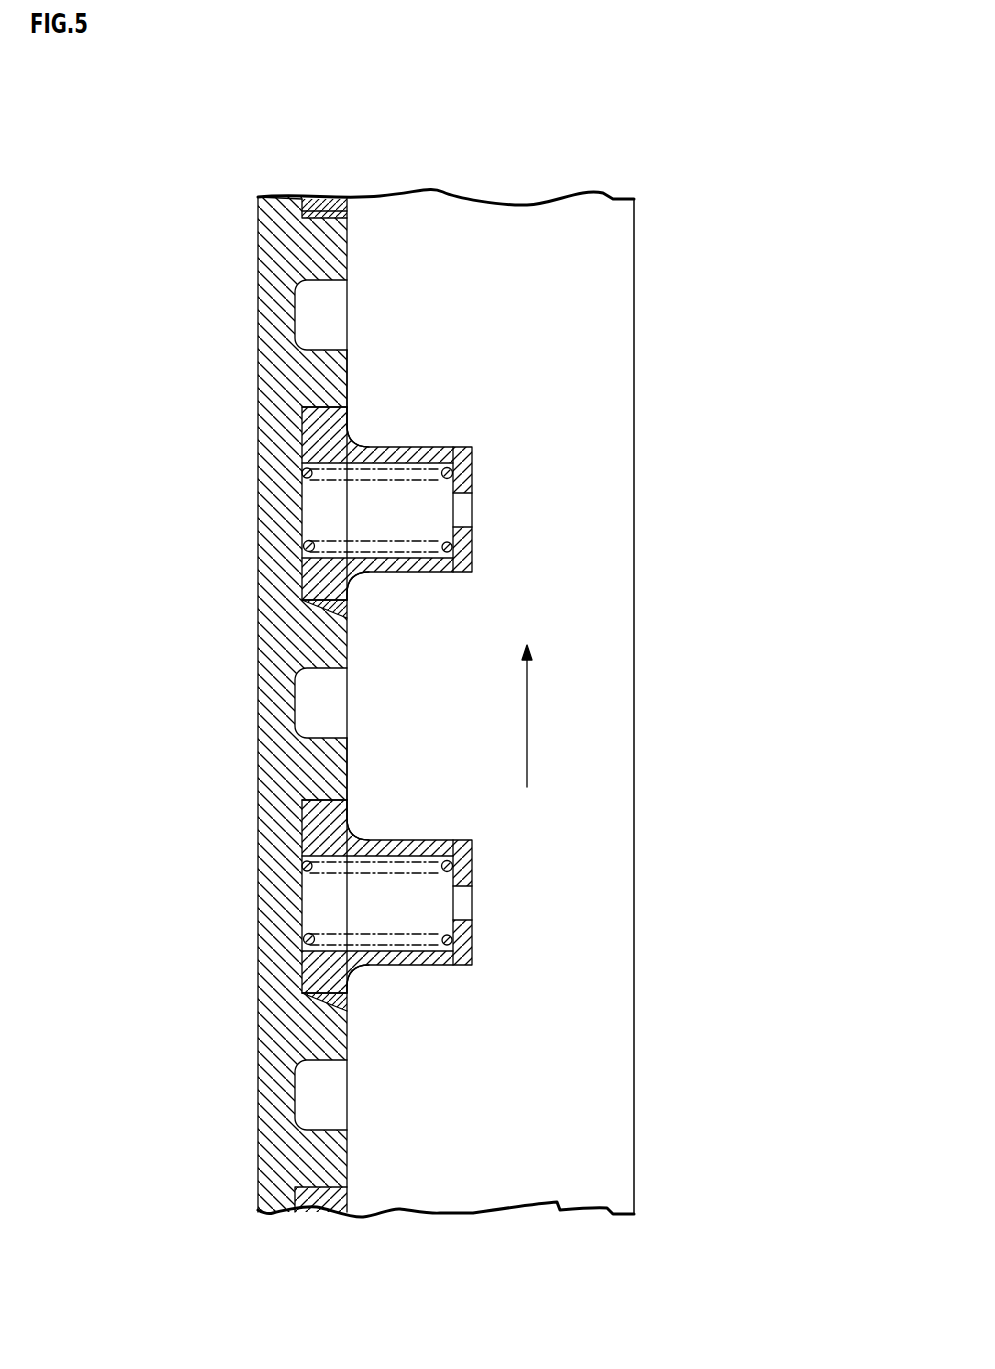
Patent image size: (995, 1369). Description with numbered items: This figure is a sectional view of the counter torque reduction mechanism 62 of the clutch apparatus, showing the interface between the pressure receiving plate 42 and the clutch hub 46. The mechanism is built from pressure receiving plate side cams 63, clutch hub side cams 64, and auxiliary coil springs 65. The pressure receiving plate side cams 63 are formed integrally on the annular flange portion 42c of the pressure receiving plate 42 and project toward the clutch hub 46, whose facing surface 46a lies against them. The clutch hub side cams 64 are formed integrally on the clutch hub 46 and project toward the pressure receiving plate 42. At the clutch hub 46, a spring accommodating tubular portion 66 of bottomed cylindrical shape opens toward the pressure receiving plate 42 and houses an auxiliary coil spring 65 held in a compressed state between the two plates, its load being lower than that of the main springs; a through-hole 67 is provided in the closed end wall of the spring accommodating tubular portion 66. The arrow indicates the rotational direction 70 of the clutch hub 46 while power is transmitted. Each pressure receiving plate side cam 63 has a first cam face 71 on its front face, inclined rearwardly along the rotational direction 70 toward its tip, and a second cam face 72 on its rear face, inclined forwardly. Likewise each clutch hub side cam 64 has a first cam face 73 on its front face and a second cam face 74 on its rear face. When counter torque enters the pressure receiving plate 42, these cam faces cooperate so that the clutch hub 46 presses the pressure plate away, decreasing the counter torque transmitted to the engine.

The pressure receiving plate 42 is at (245, 250).
The annular flange portion 42c is at (280, 216).
The clutch hub 46 is at (470, 186).
The contact surface of mating member 46a is at (502, 285).
The counter torque reduction mechanism 62 is at (410, 980).
The pressure receiving plate side cams 63 is at (307, 380).
The clutch hub side cams 64 is at (312, 582).
The auxiliary coil springs 65 is at (447, 467).
The spring accommodating tubular portion 66 is at (465, 483).
The through-hole 67 is at (478, 513).
The rotational direction 70 is at (527, 722).
The pressure receiving plate side first cam face 71 is at (322, 216).
The pressure receiving plate side second cam face 72 is at (338, 411).
The clutch hub side first cam face 73 is at (323, 402).
The clutch hub side second cam face 74 is at (346, 621).